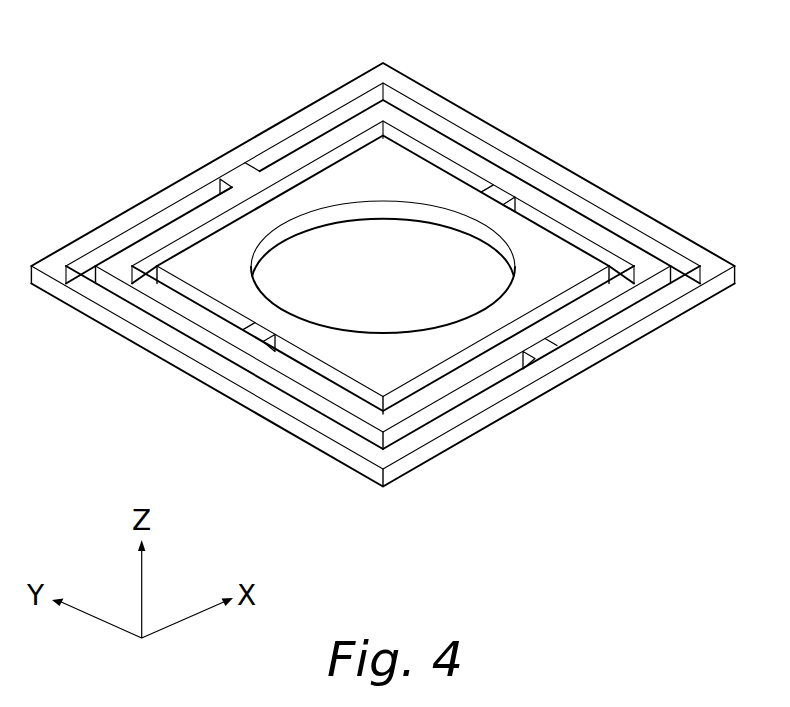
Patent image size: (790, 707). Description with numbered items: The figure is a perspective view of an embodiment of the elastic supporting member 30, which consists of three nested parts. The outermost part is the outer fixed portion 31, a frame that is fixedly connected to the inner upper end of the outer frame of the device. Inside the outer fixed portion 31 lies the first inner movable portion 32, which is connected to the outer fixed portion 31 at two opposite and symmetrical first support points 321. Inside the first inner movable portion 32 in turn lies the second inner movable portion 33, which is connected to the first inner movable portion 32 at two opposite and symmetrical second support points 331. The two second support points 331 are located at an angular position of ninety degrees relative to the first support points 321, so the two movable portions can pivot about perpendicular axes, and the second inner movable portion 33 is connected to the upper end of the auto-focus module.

The elastic supporting member 30 is at (249, 147).
The outer fixed portion 31 is at (188, 362).
The first inner movable portion 32 is at (447, 147).
The second inner movable portion 33 is at (537, 250).
The first support points 321 is at (230, 182).
The second support points 331 is at (503, 201).